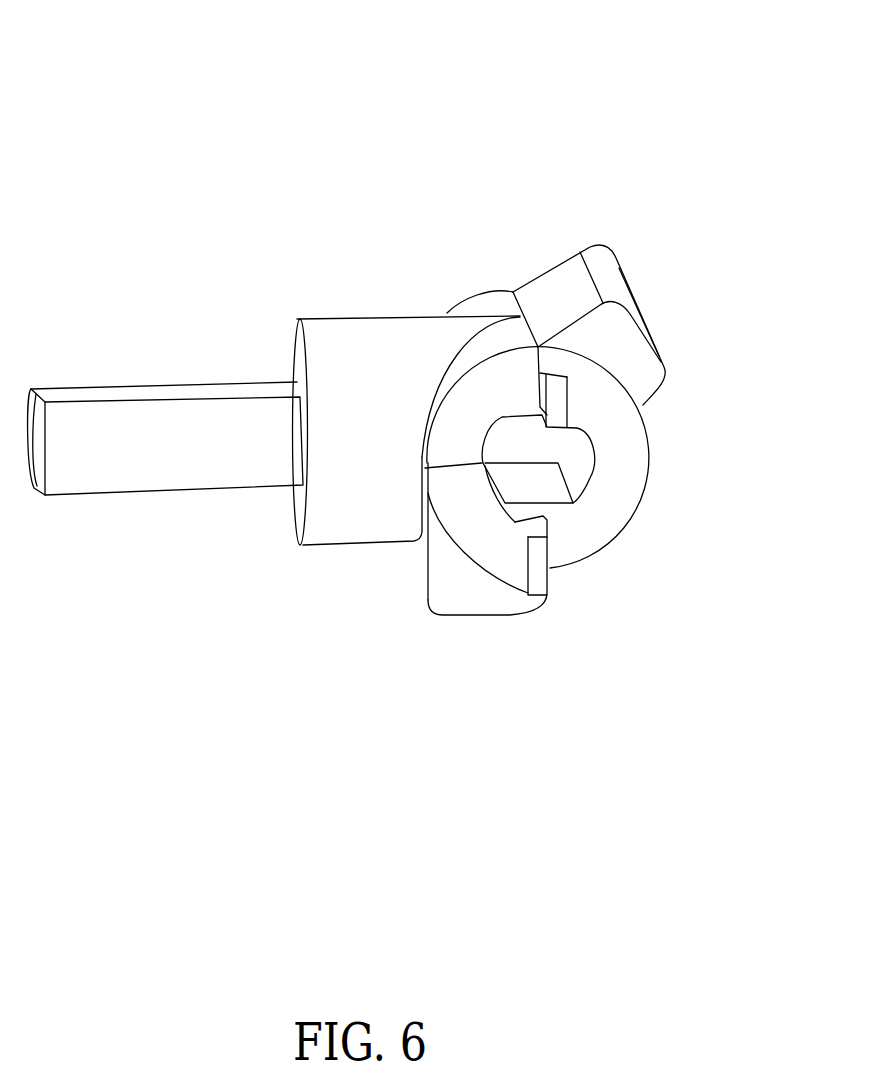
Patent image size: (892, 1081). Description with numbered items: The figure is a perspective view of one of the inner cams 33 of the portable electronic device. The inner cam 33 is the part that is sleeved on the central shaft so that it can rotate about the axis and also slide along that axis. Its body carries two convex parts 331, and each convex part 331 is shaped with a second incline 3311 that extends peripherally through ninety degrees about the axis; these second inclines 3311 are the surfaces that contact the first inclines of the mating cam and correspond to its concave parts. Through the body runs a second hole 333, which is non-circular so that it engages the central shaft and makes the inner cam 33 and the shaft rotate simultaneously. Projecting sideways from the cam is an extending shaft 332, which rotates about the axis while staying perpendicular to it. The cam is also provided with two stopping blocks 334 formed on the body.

The inner cam 33 is at (385, 358).
The convex part 331 is at (600, 415).
The second incline 3311 is at (625, 433).
The extending shaft 332 is at (140, 475).
The second hole 333 is at (547, 438).
The stopping block 334 is at (620, 340).